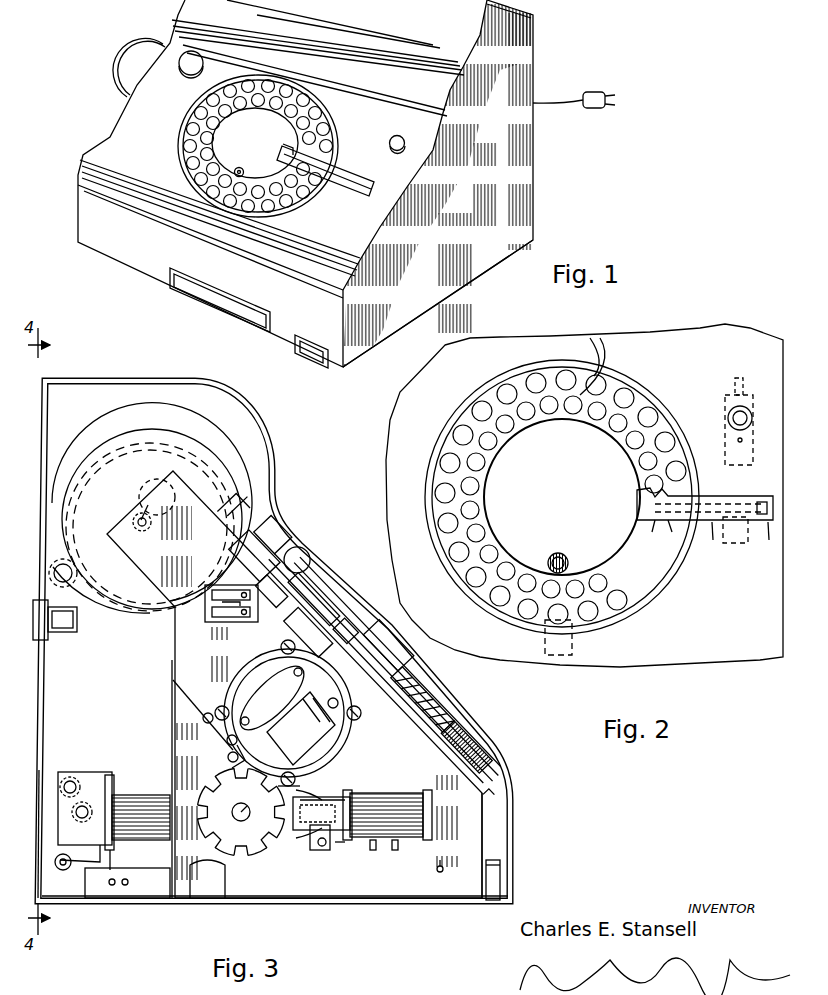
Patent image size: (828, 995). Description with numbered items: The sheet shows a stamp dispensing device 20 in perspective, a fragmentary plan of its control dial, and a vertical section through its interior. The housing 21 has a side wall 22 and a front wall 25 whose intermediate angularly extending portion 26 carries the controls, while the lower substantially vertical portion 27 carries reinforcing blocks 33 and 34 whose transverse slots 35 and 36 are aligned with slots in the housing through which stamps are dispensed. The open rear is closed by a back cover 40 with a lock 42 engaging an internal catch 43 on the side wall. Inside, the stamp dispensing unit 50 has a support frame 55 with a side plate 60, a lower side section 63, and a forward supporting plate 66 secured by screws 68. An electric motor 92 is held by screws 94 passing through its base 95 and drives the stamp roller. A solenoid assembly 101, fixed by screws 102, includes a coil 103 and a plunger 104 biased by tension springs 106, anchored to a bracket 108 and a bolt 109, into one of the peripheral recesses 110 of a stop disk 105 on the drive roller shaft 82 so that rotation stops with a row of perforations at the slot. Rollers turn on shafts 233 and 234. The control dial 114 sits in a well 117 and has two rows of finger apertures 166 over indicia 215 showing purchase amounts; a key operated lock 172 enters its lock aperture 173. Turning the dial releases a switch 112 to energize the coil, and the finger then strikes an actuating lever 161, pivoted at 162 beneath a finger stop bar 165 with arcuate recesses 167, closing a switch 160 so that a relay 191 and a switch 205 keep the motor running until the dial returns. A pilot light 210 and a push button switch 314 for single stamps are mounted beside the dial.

In FIG. 1, the stamp dispensing device 20 is at (549, 66).
In FIG. 1, the housing 21 is at (482, 278).
In FIG. 1, the side wall 22 is at (515, 177).
In FIG. 3, the side wall 22 is at (62, 702).
In FIG. 1, the front wall 25 is at (95, 243).
In FIG. 1, the intermediate angularly extending portion 26 is at (108, 137).
In FIG. 2, the intermediate angularly extending portion 26 is at (750, 640).
In FIG. 1, the lower substantially vertical portion 27 is at (142, 262).
In FIG. 1, the reinforcing block 33 is at (242, 330).
In FIG. 1, the reinforcing block 34 is at (312, 362).
In FIG. 1, the transverse slot 35 is at (208, 300).
In FIG. 1, the transverse slot 36 is at (300, 345).
In FIG. 3, the back cover 40 is at (36, 798).
In FIG. 3, the lock 42 is at (40, 612).
In FIG. 3, the internal catch 43 is at (85, 632).
In FIG. 3, the stamp dispensing unit 50 is at (172, 651).
In FIG. 3, the support frame 55 is at (490, 813).
In FIG. 3, the side plate 60 is at (178, 622).
In FIG. 3, the lower side section 63 is at (326, 897).
In FIG. 3, the forward supporting plate 66 is at (460, 764).
In FIG. 3, the screws 68 is at (280, 557).
In FIG. 3, the drive roller shaft 82 is at (238, 768).
In FIG. 3, the electric motor 92 is at (334, 740).
In FIG. 3, the screws 94 is at (362, 713).
In FIG. 3, the base 95 is at (342, 752).
In FIG. 3, the solenoid assembly 101 is at (335, 843).
In FIG. 3, the screws 102 is at (420, 840).
In FIG. 3, the coil 103 is at (387, 837).
In FIG. 3, the plunger 104 is at (293, 826).
In FIG. 3, the stop disk 105 is at (207, 793).
In FIG. 3, the tension springs 106 is at (306, 850).
In FIG. 3, the bracket 108 is at (300, 788).
In FIG. 3, the bolt 109 is at (326, 850).
In FIG. 3, the peripheral recesses 110 is at (215, 836).
In FIG. 2, the switch 112 is at (502, 573).
In FIG. 1, the control dial 114 is at (180, 156).
In FIG. 3, the well 117 is at (405, 682).
In FIG. 2, the switch 160 is at (733, 552).
In FIG. 2, the actuating lever 161 is at (733, 494).
In FIG. 2, the pivot 162 is at (768, 522).
In FIG. 1, the finger stop bar 165 is at (346, 202).
In FIG. 2, the finger stop bar 165 is at (712, 522).
In FIG. 2, the finger apertures 166 is at (584, 355).
In FIG. 2, the arcuate recesses 167 is at (659, 532).
In FIG. 1, the key operated lock 172 is at (255, 143).
In FIG. 1, the lock aperture 173 is at (252, 160).
In FIG. 3, the relay 191 is at (218, 630).
In FIG. 3, the switch 205 is at (386, 842).
In FIG. 1, the pilot light 210 is at (182, 55).
In FIG. 2, the indicia 215 is at (641, 420).
In FIG. 3, the shaft 233 is at (204, 716).
In FIG. 3, the shaft 234 is at (228, 740).
In FIG. 1, the push button switch 314 is at (392, 150).